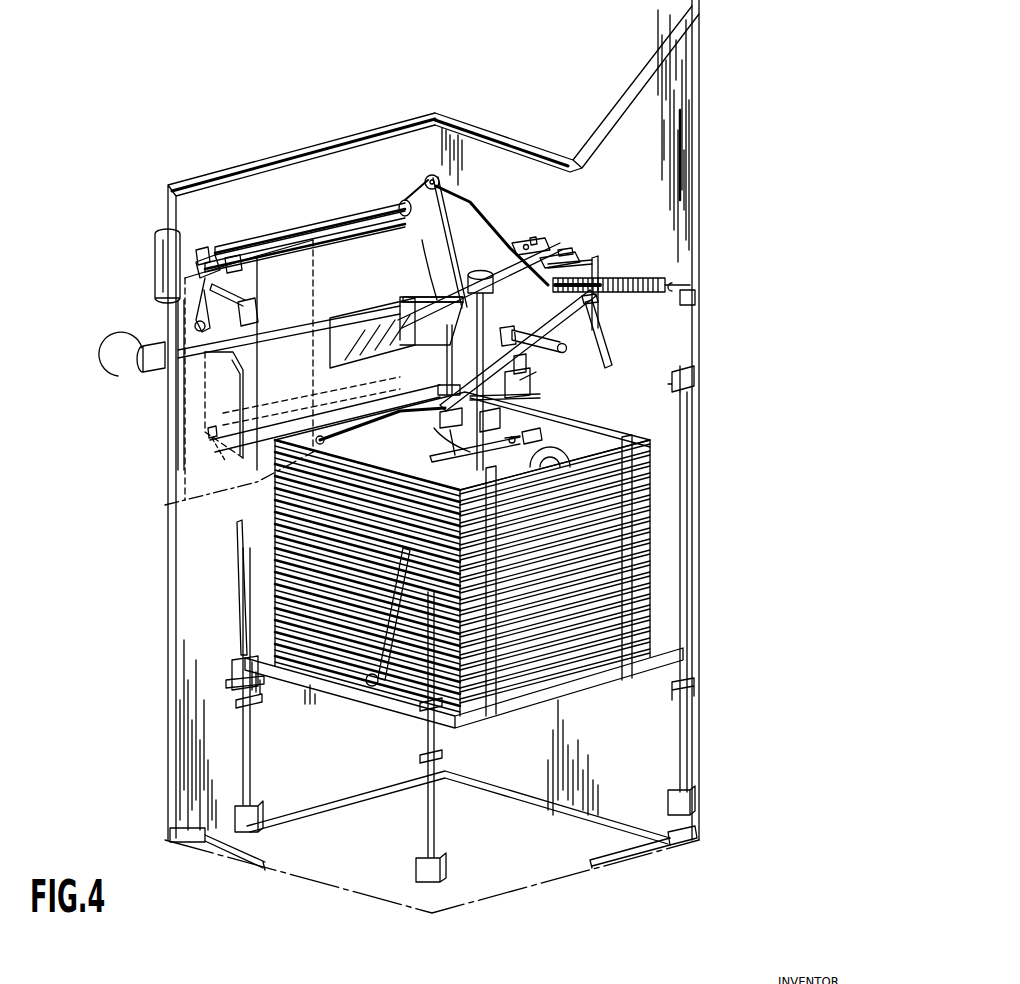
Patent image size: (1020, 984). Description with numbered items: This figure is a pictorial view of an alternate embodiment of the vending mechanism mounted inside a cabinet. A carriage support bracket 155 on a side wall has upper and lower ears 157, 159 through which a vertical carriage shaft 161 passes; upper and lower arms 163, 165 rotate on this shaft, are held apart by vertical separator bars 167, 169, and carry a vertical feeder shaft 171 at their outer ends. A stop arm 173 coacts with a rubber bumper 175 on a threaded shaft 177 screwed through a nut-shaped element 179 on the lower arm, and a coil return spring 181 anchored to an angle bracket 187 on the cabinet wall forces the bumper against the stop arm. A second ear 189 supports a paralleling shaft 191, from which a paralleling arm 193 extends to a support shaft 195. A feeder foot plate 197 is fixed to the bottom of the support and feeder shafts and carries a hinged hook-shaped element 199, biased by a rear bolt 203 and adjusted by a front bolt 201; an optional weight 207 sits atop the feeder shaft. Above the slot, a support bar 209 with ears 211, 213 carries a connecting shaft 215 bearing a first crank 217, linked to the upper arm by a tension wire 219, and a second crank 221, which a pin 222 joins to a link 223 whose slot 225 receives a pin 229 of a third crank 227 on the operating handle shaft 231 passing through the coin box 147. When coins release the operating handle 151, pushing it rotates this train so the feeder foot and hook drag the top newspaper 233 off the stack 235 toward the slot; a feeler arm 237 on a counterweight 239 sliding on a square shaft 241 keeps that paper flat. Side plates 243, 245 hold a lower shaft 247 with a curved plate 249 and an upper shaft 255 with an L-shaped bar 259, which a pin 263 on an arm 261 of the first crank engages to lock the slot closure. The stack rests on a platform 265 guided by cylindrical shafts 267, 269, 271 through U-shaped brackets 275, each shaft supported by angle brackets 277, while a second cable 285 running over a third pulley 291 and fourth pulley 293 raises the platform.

The coin box 147 is at (160, 468).
The operating handle 151 is at (158, 248).
The carriage support bracket 155 is at (565, 262).
The upper ear 157 is at (548, 256).
The lower ear 159 is at (598, 325).
The carriage shaft 161 is at (594, 259).
The upper arm 163 is at (565, 250).
The lower arm 165 is at (444, 421).
The vertical separator bar 167 is at (548, 327).
The vertical separator bar 169 is at (524, 378).
The feeder shaft 171 is at (468, 445).
The stop arm 173 is at (597, 305).
The rubber bumper 175 is at (567, 348).
The threaded shaft 177 is at (549, 350).
The nut-shaped element 179 is at (520, 383).
The coil return spring 181 is at (648, 276).
The angle bracket 187 is at (696, 286).
The ear 189 is at (524, 240).
The paralleling shaft 191 is at (531, 240).
The paralleling arm 193 is at (513, 252).
The support shaft 195 is at (444, 432).
The feeder foot plate 197 is at (451, 434).
The hook-shaped element 199 is at (556, 446).
The front bolt 201 is at (512, 440).
The rear bolt 203 is at (528, 438).
The weight 207 is at (446, 275).
The support bar 209 is at (326, 212).
The ear 211 is at (427, 216).
The ear 213 is at (232, 258).
The connecting shaft 215 is at (350, 222).
The first crank 217 is at (430, 178).
The tension wire 219 is at (448, 200).
The second crank 221 is at (200, 250).
The pin 222 is at (158, 328).
The link 223 is at (222, 272).
The slot 225 is at (250, 292).
The third crank 227 is at (258, 312).
The pin 229 is at (160, 302).
The operating handle shaft 231 is at (183, 362).
The top newspaper/magazine 233 is at (600, 428).
The stack of newspapers/magazines 235 is at (648, 552).
The feeler arm 237 is at (382, 440).
The counterweight 239 is at (536, 400).
The square-shaped vertically disposed shaft 241 is at (494, 422).
The right side plate 243 is at (425, 296).
The left side plate 245 is at (246, 378).
The lower shaft 247 is at (218, 438).
The curved plate 249 is at (360, 408).
The upper shaft 255 is at (370, 316).
The L-shaped bar 259 is at (428, 262).
The arm 261 is at (440, 232).
The pin 263 is at (443, 348).
The platform 265 is at (576, 688).
The cylindrical shaft 267 is at (250, 762).
The cylindrical shaft 269 is at (434, 816).
The cylindrical shaft 271 is at (690, 722).
The U-shaped bracket 275 is at (261, 690).
The angle bracket 277 is at (697, 377).
The second cable 285 is at (238, 545).
The third pulley 291 is at (372, 686).
The fourth pulley 293 is at (248, 640).